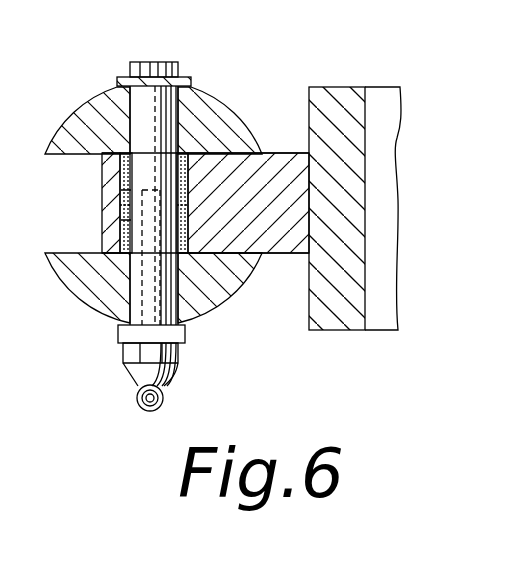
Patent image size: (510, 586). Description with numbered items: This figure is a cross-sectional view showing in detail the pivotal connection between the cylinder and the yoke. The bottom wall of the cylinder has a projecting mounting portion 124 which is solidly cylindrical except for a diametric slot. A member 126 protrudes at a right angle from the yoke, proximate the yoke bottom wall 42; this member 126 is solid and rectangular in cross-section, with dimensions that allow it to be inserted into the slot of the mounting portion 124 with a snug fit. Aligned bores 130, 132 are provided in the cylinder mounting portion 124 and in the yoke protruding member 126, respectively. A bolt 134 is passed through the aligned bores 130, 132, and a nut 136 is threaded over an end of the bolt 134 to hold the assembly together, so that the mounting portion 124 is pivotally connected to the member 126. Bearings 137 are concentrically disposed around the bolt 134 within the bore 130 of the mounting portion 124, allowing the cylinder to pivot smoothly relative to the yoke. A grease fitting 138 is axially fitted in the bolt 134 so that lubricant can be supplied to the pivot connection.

The bottom wall 42 is at (343, 112).
The mounting portion 124 is at (214, 114).
The member 126 is at (279, 156).
The bore 130 is at (140, 125).
The bore 132 is at (183, 183).
The bolt 134 is at (170, 62).
The nut 136 is at (122, 78).
The bearings 137 is at (122, 228).
The grease fitting 138 is at (143, 380).